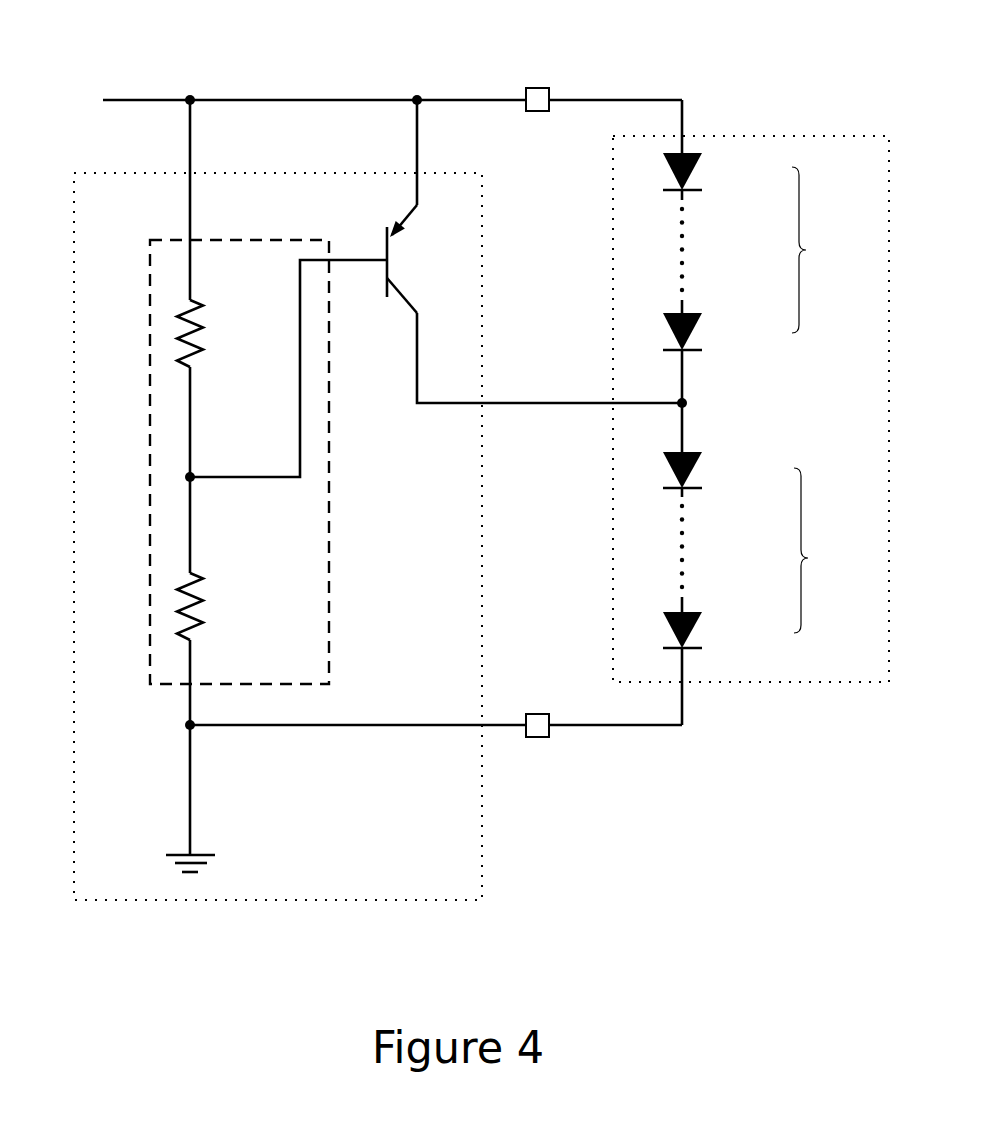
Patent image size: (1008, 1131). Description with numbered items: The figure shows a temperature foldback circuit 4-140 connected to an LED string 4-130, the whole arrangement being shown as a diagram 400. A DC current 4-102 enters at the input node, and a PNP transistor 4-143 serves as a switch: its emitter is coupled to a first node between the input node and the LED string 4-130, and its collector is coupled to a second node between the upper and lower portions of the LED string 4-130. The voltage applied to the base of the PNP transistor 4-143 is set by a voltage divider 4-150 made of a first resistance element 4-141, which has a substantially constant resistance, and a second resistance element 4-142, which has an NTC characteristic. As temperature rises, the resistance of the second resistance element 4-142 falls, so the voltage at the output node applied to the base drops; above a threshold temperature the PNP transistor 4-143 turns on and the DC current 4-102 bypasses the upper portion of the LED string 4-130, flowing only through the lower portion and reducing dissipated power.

The LED driver circuit 400 is at (172, 34).
The DC current 4-102 is at (145, 123).
The LED string 4-130 is at (722, 133).
The temperature foldback circuit 4-140 is at (483, 835).
The first resistance element 4-141 is at (203, 323).
The second resistance element 4-142 is at (203, 605).
The PNP transistor 4-143 is at (386, 238).
The voltage divider 4-150 is at (329, 543).